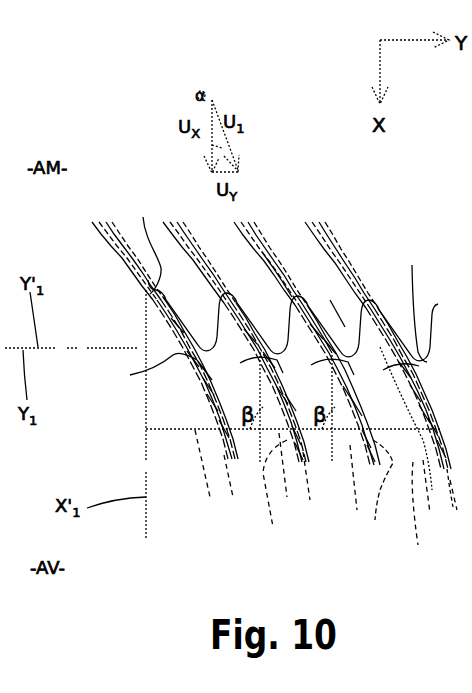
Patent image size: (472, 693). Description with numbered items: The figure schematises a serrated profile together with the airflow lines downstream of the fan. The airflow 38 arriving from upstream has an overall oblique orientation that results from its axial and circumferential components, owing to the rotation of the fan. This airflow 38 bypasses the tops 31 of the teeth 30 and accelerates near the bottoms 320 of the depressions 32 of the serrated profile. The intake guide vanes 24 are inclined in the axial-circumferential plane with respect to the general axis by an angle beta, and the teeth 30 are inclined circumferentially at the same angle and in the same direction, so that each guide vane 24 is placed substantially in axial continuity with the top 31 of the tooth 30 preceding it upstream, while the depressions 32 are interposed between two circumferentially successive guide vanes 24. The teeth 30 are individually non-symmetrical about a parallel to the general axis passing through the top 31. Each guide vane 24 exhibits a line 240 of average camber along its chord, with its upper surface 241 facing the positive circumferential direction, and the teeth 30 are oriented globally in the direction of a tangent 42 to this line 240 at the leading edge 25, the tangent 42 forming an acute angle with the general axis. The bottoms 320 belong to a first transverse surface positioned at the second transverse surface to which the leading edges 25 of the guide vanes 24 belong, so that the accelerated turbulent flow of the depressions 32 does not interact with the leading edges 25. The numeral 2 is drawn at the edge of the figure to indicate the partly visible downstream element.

The blade 2 is at (452, 371).
The intake guide vane 24 is at (199, 392).
The leading edge 25 is at (173, 356).
The tooth 30 is at (147, 311).
The top of tooth 31 is at (145, 245).
The depression 32 is at (322, 300).
The airflow 38 is at (100, 238).
The tangent 42 is at (274, 250).
The line of average camber 240 is at (326, 501).
The upper surface 241 is at (374, 496).
The bottom of depression 320 is at (414, 306).